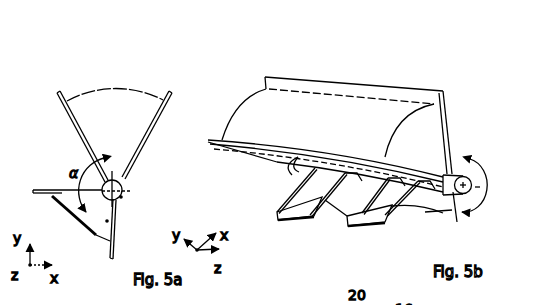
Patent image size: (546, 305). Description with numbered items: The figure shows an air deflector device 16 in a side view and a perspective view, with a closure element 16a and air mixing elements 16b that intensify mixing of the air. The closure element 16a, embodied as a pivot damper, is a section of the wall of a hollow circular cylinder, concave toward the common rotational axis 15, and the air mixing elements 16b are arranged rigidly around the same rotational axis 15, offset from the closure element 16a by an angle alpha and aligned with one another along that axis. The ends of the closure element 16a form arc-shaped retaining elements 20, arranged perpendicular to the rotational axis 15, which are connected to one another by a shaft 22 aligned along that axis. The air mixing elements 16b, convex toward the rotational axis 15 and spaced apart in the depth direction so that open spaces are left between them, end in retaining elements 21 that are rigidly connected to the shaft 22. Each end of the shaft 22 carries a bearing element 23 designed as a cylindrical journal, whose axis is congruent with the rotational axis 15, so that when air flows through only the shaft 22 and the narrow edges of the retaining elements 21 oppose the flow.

In FIG. 5A, the rotational axis 15 is at (117, 186).
In FIG. 5B, the rotational axis 15 is at (253, 163).
In FIG. 5A, the air deflector device 16 is at (156, 70).
In FIG. 5B, the air deflector device 16 is at (463, 83).
In FIG. 5A, the closure element 16a is at (106, 89).
In FIG. 5B, the closure element 16a is at (333, 131).
In FIG. 5A, the air mixing elements 16b is at (81, 216).
In FIG. 5B, the air mixing elements 16b is at (284, 218).
In FIG. 5A, the retaining elements 20 is at (124, 136).
In FIG. 5B, the retaining elements 20 is at (424, 140).
In FIG. 5A, the retaining elements 21 is at (111, 221).
In FIG. 5B, the retaining elements 21 is at (341, 192).
In FIG. 5B, the shaft 22 is at (300, 172).
In FIG. 5A, the bearing elements 23 is at (124, 197).
In FIG. 5B, the bearing elements 23 is at (247, 204).